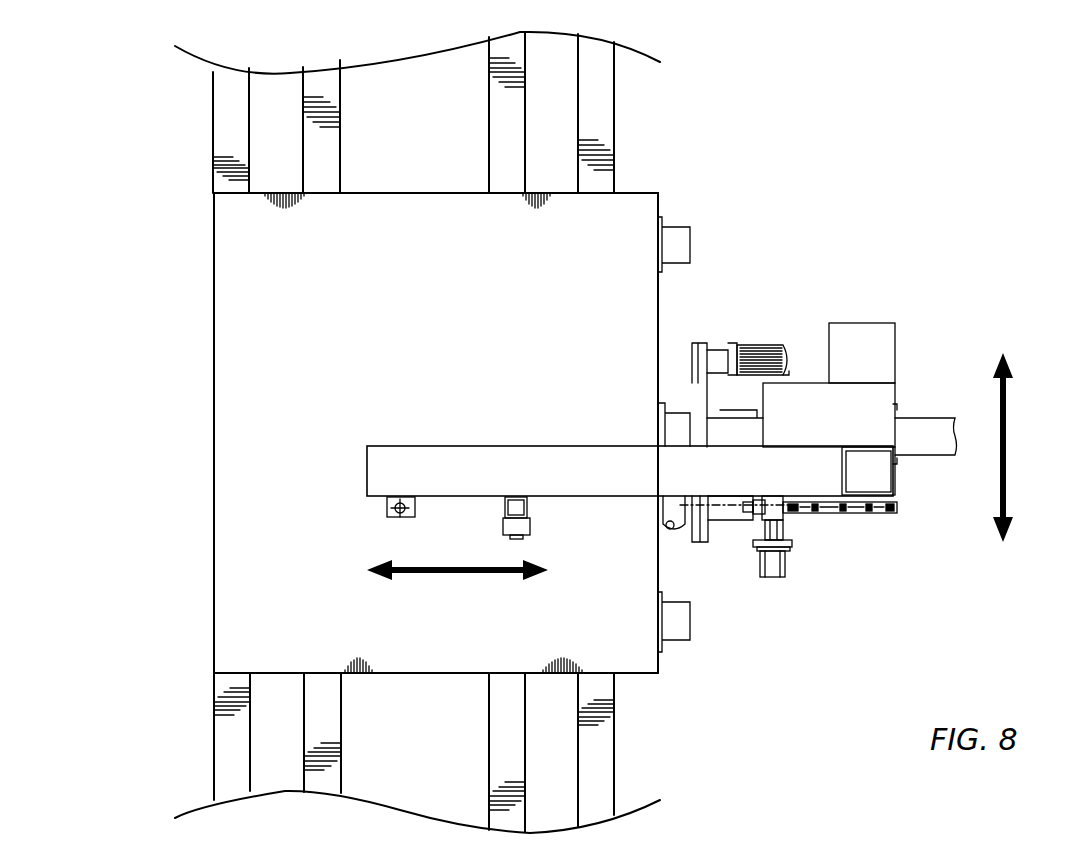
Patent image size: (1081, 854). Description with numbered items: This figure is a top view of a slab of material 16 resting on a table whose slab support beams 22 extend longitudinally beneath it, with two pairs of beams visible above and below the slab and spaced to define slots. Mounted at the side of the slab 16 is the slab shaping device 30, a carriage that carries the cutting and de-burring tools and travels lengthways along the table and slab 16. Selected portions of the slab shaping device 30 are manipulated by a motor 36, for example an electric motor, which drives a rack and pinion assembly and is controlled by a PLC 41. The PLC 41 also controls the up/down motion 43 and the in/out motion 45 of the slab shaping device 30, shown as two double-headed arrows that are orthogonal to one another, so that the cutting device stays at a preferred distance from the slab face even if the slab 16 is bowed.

The slab support beams 22 is at (313, 167).
The slab of material 16 is at (444, 361).
The slab shaping device 30 is at (662, 408).
The motor 36 is at (765, 340).
The PLC 41 is at (897, 341).
The up/down motion 43 is at (1004, 478).
The in/out motion 45 is at (436, 576).